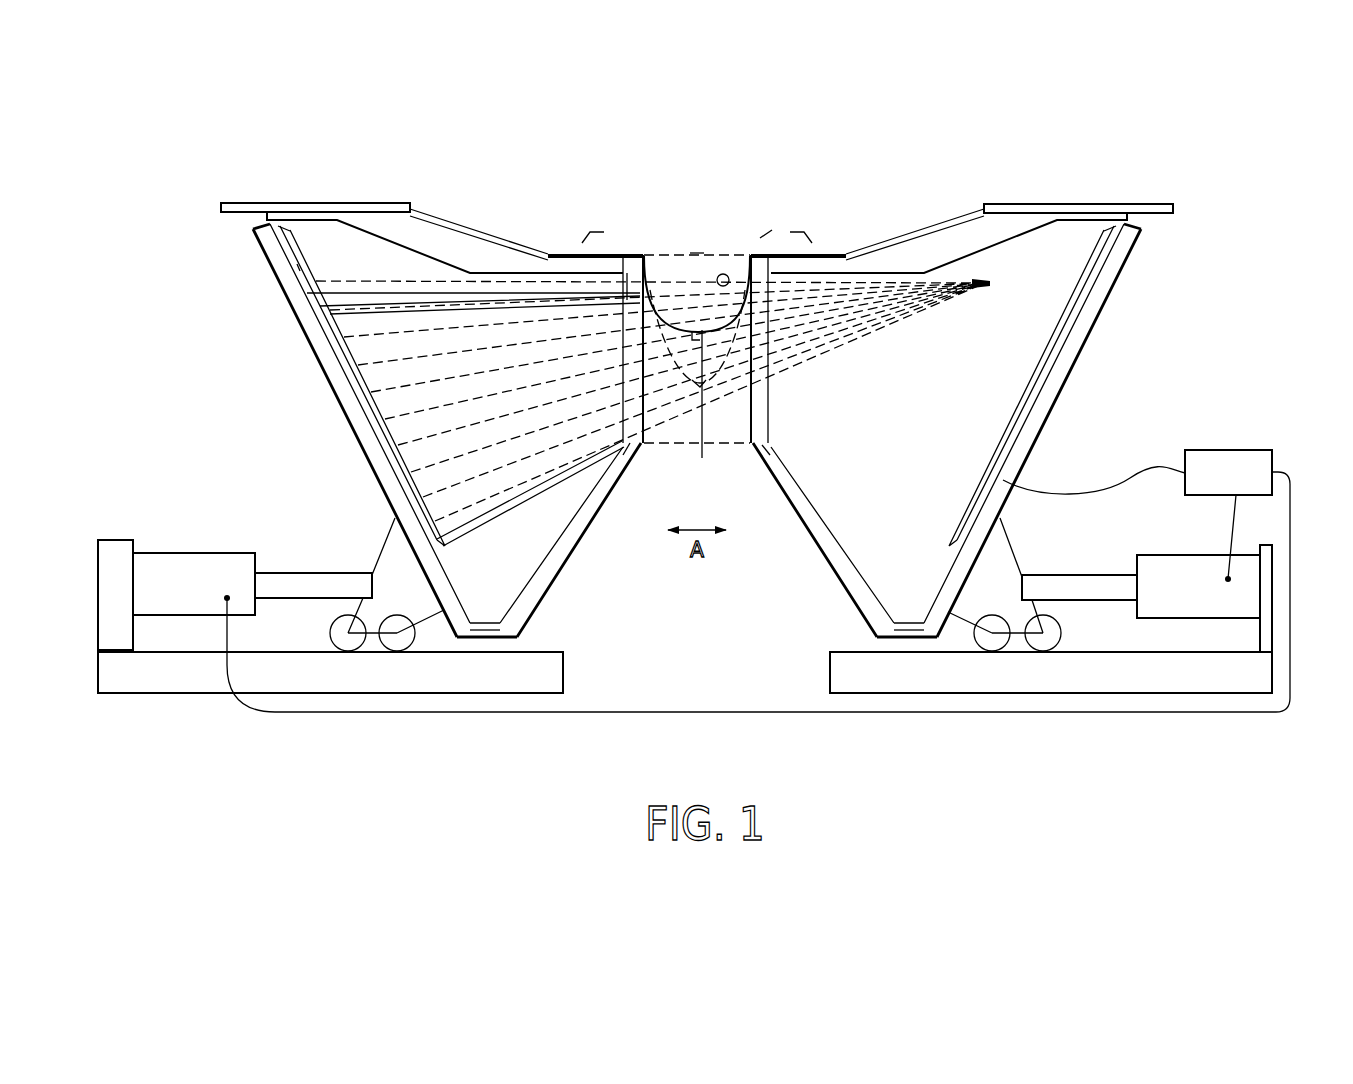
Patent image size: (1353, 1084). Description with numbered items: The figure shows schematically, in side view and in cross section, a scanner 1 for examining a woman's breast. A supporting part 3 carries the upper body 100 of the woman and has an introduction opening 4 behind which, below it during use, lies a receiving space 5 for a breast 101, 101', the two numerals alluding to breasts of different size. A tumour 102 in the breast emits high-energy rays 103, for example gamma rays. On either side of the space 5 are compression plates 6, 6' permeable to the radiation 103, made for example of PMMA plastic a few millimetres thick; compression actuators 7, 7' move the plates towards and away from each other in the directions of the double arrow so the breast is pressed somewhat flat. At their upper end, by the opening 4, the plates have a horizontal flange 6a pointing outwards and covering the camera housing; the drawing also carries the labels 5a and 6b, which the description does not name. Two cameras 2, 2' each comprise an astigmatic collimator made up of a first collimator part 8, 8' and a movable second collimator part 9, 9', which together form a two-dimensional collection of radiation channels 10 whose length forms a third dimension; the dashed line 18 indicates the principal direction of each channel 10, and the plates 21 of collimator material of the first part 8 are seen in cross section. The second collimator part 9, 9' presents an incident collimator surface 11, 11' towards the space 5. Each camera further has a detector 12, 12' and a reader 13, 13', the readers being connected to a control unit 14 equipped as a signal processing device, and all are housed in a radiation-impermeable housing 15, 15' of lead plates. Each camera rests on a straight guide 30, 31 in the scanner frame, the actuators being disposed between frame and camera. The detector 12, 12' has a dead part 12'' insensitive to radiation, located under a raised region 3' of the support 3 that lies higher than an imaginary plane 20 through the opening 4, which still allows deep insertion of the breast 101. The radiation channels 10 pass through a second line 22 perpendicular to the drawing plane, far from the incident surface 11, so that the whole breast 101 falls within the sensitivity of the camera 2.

The scanner 1 is at (190, 348).
The camera 2 is at (174, 447).
The camera 2' is at (1233, 368).
The supporting part 3 is at (697, 201).
The raised region of the support 3' is at (697, 178).
The introduction opening 4 is at (663, 254).
The receiving space 5 is at (673, 411).
The center line 5a is at (702, 457).
The compression plate 6 is at (645, 386).
The compression plate 6' is at (789, 349).
The flange 6a is at (567, 253).
The right horizontal plate 6b is at (813, 256).
The compression actuator 7 is at (271, 564).
The compression actuator 7' is at (1110, 567).
The first collimator part 8 is at (493, 583).
The first collimator part 8' is at (904, 568).
The second collimator part 9 is at (633, 480).
The second collimator part 9' is at (759, 481).
The radiation channels 10 is at (627, 273).
The incident collimator surface 11 is at (650, 346).
The incident collimator surface 11' is at (685, 402).
The detector 12 is at (358, 383).
The detector 12' is at (1047, 383).
The dead part of the detector 12'' is at (701, 242).
The reader 13 is at (364, 388).
The reader 13' is at (1033, 388).
The control unit 14 is at (1228, 450).
The housing 15 is at (419, 390).
The housing 15' is at (976, 390).
The principal direction of the channels 18 is at (393, 312).
The imaginary plane 20 is at (697, 253).
The collimator plates 21 is at (490, 317).
The second line 22 is at (989, 283).
The straight guide 30 is at (320, 684).
The straight guide 31 is at (1070, 687).
The upper body 100 is at (772, 230).
The breast 101 is at (697, 298).
The breast 101' is at (646, 338).
The tumour 102 is at (723, 274).
The high-energy rays 103 is at (338, 306).